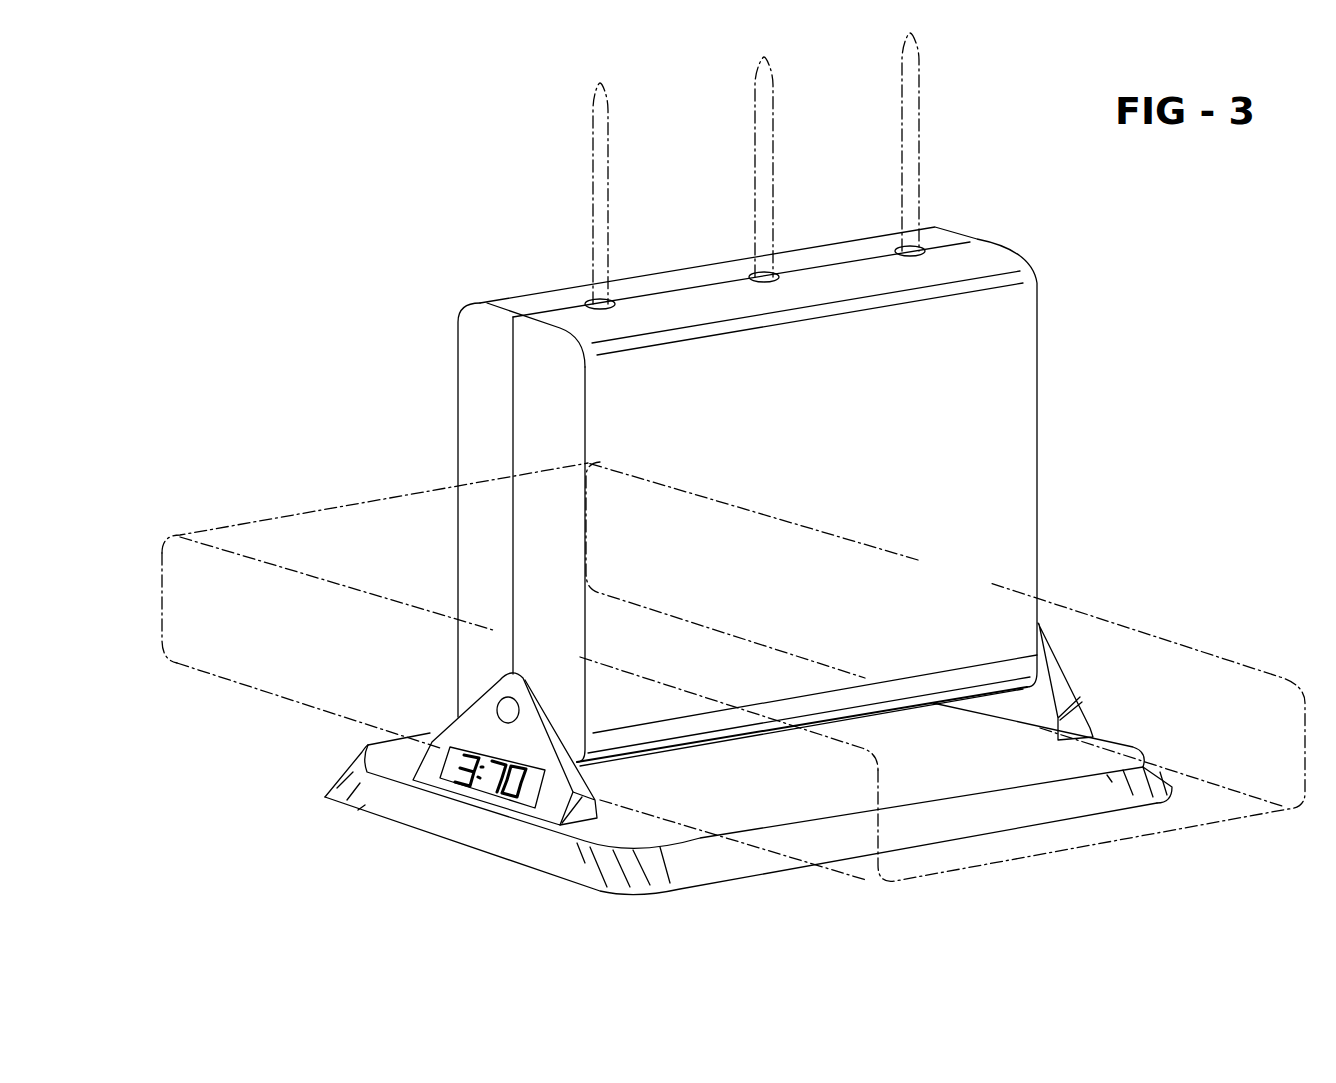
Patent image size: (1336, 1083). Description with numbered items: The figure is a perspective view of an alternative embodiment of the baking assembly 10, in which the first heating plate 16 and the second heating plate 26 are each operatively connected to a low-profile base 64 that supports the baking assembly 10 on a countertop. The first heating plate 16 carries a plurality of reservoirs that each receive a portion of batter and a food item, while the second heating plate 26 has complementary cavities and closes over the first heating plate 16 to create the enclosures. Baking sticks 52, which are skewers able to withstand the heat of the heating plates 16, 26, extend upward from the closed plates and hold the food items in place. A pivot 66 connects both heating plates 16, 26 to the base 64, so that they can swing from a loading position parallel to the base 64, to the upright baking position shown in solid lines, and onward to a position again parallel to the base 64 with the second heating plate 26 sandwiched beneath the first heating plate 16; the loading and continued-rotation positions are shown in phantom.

The baking assembly 10 is at (391, 376).
The first heating plate 16 is at (1037, 348).
The second heating plate 26 is at (467, 308).
The baking sticks 52 is at (591, 177).
The base 64 is at (332, 780).
The pivot 66 is at (497, 708).